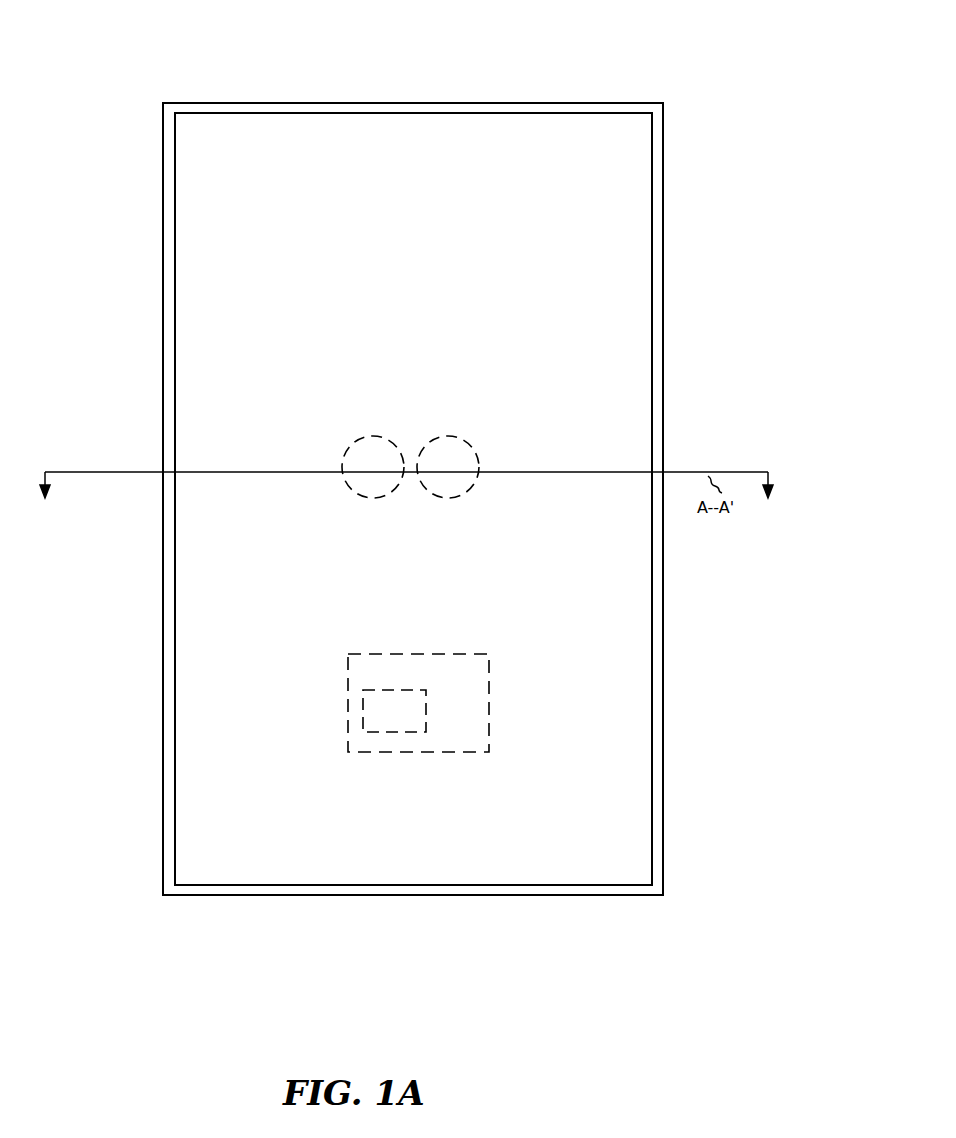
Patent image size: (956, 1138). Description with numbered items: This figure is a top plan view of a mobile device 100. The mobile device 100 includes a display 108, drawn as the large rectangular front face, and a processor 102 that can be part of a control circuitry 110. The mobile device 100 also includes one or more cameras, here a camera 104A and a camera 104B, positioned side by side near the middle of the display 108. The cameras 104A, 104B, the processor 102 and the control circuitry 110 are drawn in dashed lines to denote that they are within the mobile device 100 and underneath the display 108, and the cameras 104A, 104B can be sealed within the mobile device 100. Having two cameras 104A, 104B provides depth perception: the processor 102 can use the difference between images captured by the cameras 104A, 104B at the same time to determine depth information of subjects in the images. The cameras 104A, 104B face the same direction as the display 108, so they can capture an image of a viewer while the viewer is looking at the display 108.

The mobile device 100 is at (760, 81).
The display 108 is at (655, 197).
The camera 104A is at (355, 440).
The camera 104B is at (472, 448).
The control circuitry 110 is at (489, 655).
The processor 102 is at (427, 717).